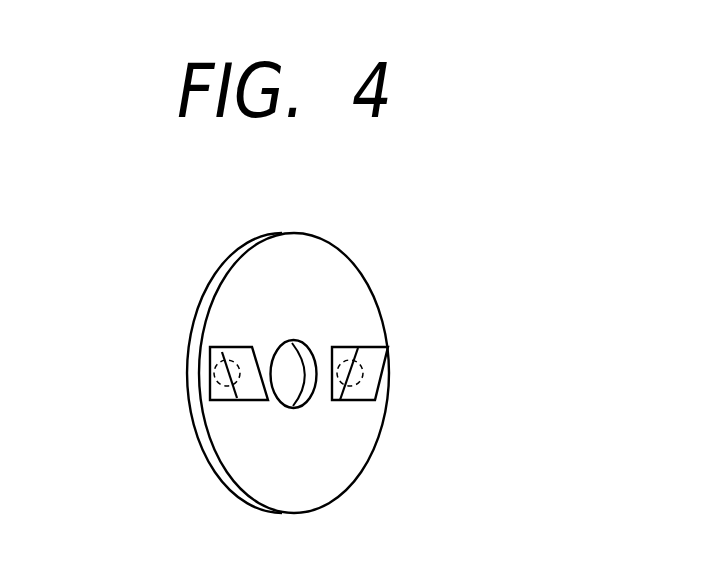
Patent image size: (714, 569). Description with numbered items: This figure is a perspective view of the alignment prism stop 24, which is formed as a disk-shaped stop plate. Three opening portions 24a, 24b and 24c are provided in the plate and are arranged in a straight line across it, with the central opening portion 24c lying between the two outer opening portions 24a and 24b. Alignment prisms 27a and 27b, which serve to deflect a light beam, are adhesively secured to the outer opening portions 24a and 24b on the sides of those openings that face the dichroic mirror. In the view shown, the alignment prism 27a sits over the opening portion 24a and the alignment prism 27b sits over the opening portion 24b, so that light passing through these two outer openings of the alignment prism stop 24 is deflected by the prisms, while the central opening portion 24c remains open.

The alignment prism stop 24 is at (345, 278).
The opening portion 24a is at (220, 385).
The opening portion 24b is at (360, 362).
The opening portion 24c is at (294, 342).
The alignment prism 27a is at (233, 346).
The alignment prism 27b is at (377, 393).